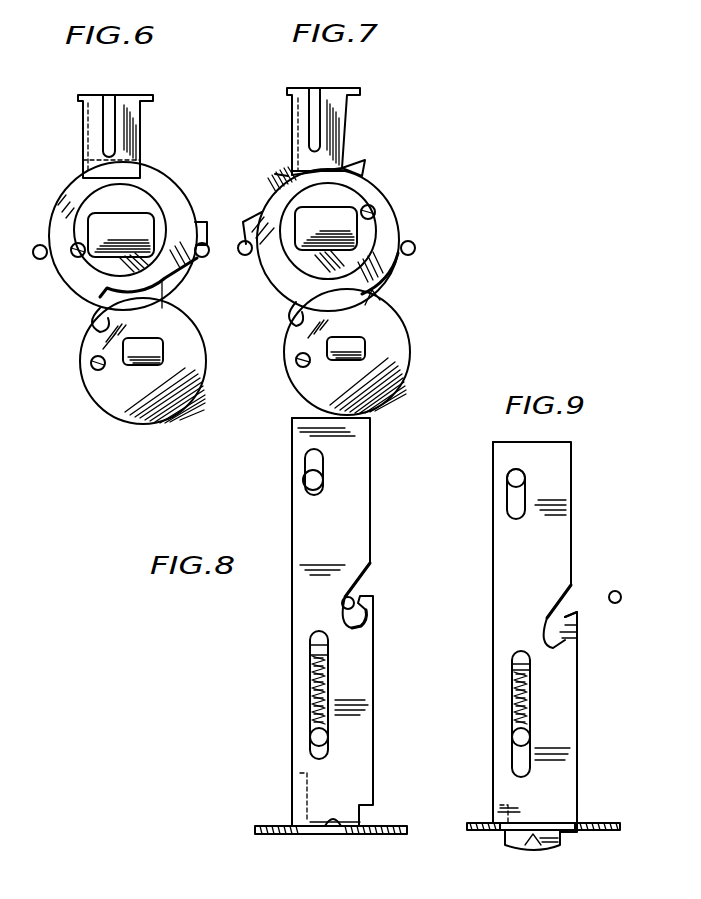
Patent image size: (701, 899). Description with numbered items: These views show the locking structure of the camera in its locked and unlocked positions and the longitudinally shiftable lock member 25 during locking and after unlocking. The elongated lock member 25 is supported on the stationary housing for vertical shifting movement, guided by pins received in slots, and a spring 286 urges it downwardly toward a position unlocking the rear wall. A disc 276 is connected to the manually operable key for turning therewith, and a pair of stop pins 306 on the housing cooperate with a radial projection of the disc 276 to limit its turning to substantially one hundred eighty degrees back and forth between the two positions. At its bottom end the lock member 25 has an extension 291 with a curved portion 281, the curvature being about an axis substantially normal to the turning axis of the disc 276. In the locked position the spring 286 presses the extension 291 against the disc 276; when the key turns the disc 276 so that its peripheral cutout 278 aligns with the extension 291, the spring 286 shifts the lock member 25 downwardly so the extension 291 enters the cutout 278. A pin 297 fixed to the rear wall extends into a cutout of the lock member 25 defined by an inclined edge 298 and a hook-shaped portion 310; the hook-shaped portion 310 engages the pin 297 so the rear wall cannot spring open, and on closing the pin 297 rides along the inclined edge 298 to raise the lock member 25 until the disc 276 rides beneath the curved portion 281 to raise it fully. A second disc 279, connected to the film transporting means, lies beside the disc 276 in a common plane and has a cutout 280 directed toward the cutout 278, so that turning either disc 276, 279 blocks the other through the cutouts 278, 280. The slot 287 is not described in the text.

In FIG. 6, the lock member 25 is at (148, 98).
In FIG. 7, the lock member 25 is at (350, 95).
In FIG. 8, the lock member 25 is at (362, 491).
In FIG. 9, the lock member 25 is at (565, 491).
In FIG. 6, the disc 276 is at (163, 180).
In FIG. 7, the disc 276 is at (283, 285).
In FIG. 8, the disc 276 is at (256, 828).
In FIG. 9, the disc 276 is at (616, 823).
In FIG. 6, the cutout 278 is at (94, 298).
In FIG. 7, the cutout 278 is at (352, 166).
In FIG. 6, the second disc 279 is at (100, 392).
In FIG. 7, the second disc 279 is at (398, 378).
In FIG. 6, the cutout 280 is at (86, 326).
In FIG. 7, the cutout 280 is at (288, 326).
In FIG. 8, the curved portion 281 is at (338, 834).
In FIG. 9, the curved portion 281 is at (542, 850).
In FIG. 8, the spring 286 is at (305, 682).
In FIG. 9, the spring 286 is at (510, 690).
In FIG. 6, the slot 287 is at (135, 123).
In FIG. 7, the slot 287 is at (340, 122).
In FIG. 6, the extension 291 is at (84, 150).
In FIG. 7, the extension 291 is at (292, 129).
In FIG. 8, the extension 291 is at (301, 787).
In FIG. 9, the extension 291 is at (502, 800).
In FIG. 8, the pin 297 is at (353, 602).
In FIG. 9, the pin 297 is at (619, 592).
In FIG. 8, the inclined edge 298 is at (367, 577).
In FIG. 9, the inclined edge 298 is at (565, 600).
In FIG. 6, the stop pins 306 is at (205, 257).
In FIG. 7, the stop pins 306 is at (243, 240).
In FIG. 8, the hook-shaped portion 310 is at (362, 626).
In FIG. 9, the hook-shaped portion 310 is at (578, 642).